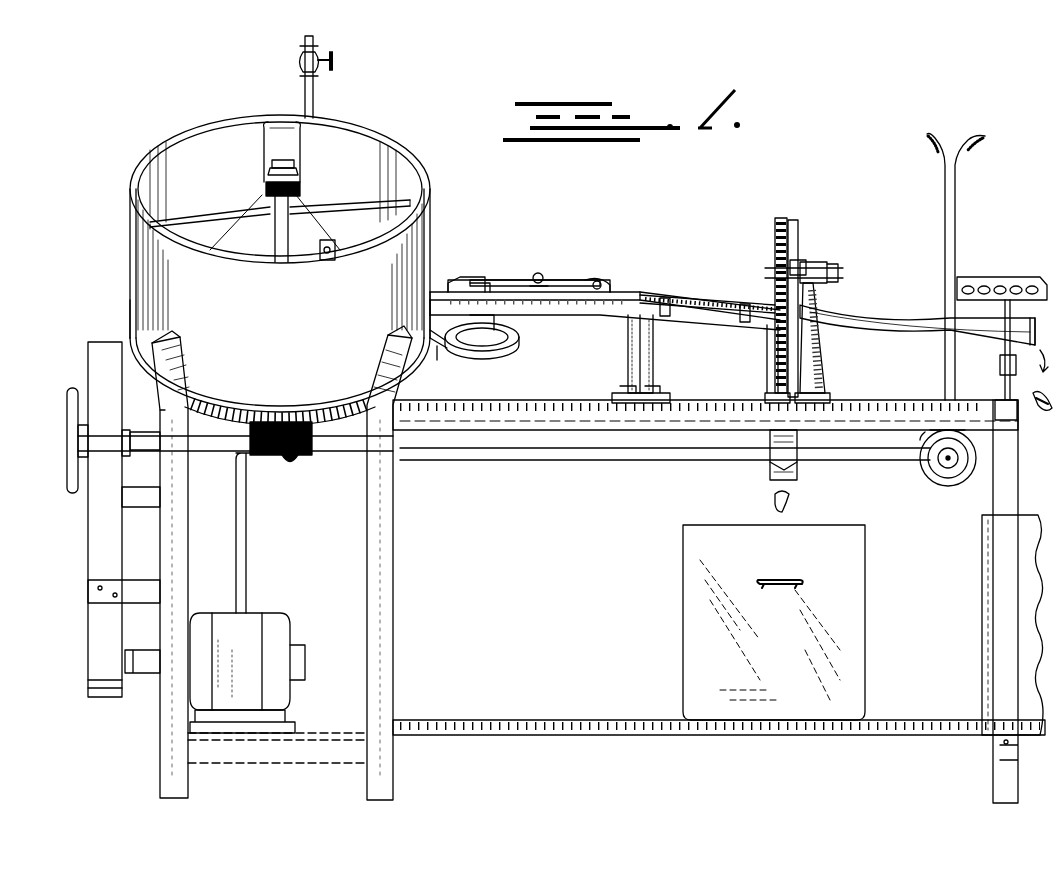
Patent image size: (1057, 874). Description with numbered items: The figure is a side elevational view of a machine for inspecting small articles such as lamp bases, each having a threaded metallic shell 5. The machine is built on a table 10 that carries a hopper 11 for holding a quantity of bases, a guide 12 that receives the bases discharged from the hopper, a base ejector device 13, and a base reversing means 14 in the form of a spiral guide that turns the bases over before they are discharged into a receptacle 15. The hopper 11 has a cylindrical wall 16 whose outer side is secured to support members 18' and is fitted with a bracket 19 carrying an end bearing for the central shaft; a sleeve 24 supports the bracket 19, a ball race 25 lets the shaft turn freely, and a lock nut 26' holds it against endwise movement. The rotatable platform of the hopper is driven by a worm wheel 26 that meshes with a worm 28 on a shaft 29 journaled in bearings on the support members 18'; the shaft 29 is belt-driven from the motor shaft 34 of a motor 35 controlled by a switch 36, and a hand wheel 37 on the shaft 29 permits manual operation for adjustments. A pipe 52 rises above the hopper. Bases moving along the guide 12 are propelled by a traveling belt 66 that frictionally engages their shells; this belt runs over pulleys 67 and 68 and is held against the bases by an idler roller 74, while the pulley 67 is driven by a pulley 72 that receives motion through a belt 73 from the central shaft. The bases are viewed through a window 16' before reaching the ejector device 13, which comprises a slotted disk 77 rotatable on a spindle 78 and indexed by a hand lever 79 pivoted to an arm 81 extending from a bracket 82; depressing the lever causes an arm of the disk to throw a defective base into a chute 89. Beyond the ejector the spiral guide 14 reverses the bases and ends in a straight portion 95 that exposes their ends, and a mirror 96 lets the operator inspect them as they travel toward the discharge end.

The table 10 is at (576, 408).
The hopper 11 is at (442, 231).
The guide 12 is at (637, 283).
The base ejector device 13 is at (818, 290).
The base reversing means 14 is at (897, 318).
The receptacle 15 is at (985, 512).
The cylindrical wall 16 is at (261, 263).
The window 16' is at (707, 284).
The support members 18' is at (295, 563).
The bracket 19 is at (300, 214).
The sleeve 24 is at (273, 243).
The ball race 25 is at (300, 190).
The worm wheel 26 is at (280, 446).
The lock nut 26' is at (312, 152).
The worm 28 is at (297, 455).
The shaft 29 is at (216, 452).
The motor shaft 34 is at (132, 650).
The motor 35 is at (250, 628).
The switch 36 is at (930, 465).
The hand wheel 37 is at (72, 432).
The metallic shell 5 is at (1040, 392).
The supply pipe 52 is at (305, 91).
The traveling belt 66 is at (565, 290).
The pulley 67 is at (485, 288).
The pulley 68 is at (603, 288).
The pulley 72 is at (505, 350).
The belt 73 is at (440, 352).
The idler roller 74 is at (540, 274).
The disk 77 is at (778, 222).
The spindle 78 is at (845, 274).
The hand lever 79 is at (795, 222).
The arm 81 is at (805, 256).
The bracket 82 is at (820, 366).
The chute 89 is at (768, 472).
The straight portion 95 is at (1033, 320).
The mirror 96 is at (978, 278).